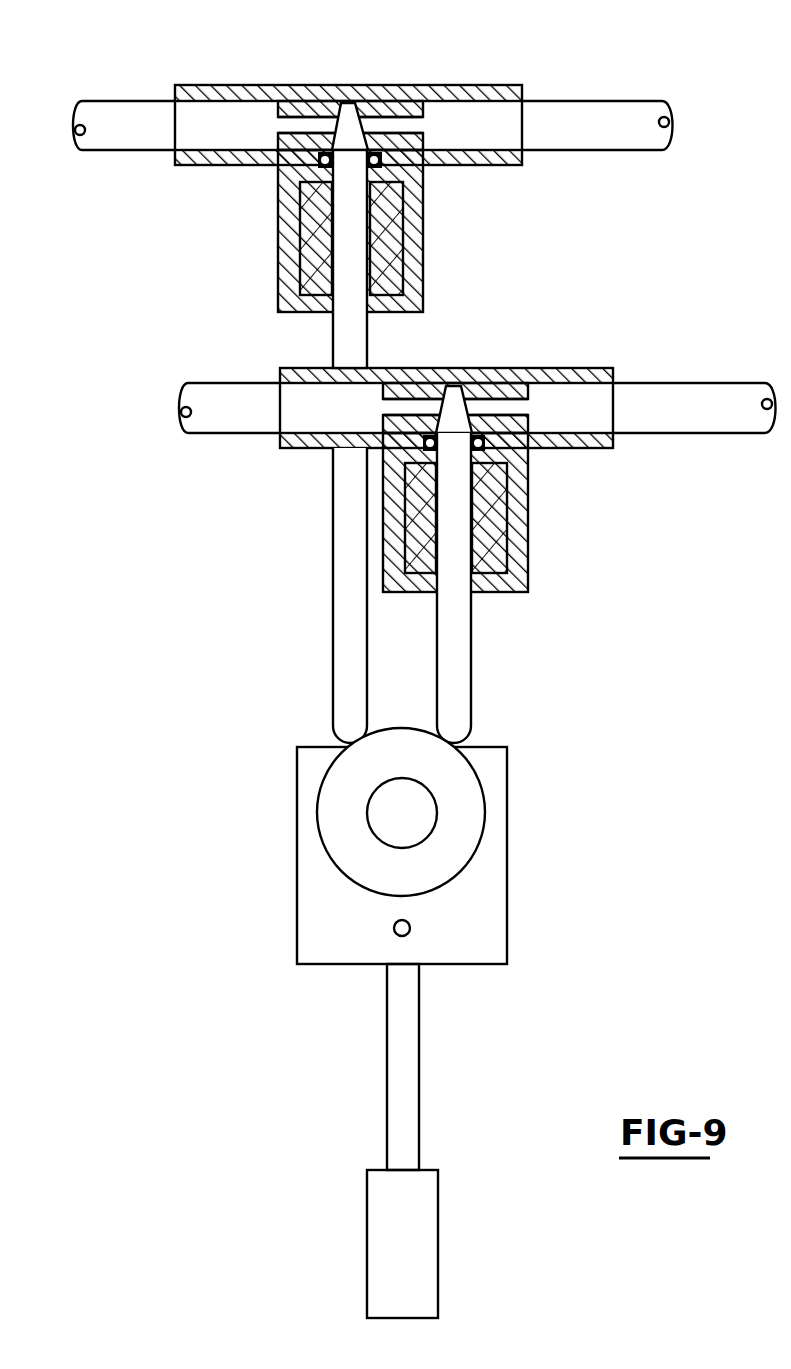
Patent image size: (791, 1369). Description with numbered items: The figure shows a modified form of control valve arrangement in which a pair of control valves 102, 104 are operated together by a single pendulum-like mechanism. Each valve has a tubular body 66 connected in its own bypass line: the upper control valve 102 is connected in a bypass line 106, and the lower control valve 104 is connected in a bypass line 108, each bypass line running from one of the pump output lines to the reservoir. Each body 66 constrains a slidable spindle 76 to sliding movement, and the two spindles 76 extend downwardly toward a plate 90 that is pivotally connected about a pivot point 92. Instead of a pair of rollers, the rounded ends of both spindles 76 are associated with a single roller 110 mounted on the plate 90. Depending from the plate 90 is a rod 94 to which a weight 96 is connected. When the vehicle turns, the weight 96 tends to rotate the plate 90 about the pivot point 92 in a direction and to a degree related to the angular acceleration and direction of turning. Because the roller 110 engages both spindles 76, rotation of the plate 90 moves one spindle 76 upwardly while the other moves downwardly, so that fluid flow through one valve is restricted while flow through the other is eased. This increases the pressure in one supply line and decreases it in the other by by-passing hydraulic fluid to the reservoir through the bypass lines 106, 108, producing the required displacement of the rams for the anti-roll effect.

The tubular body 66 is at (207, 85).
The spindle 76 is at (352, 622).
The plate 90 is at (487, 888).
The pivot point 92 is at (408, 935).
The rod 94 is at (402, 1075).
The weight 96 is at (412, 1238).
The control valve 102 is at (477, 74).
The control valve 104 is at (588, 364).
The bypass line 106 is at (607, 99).
The bypass line 108 is at (700, 377).
The roller 110 is at (460, 820).